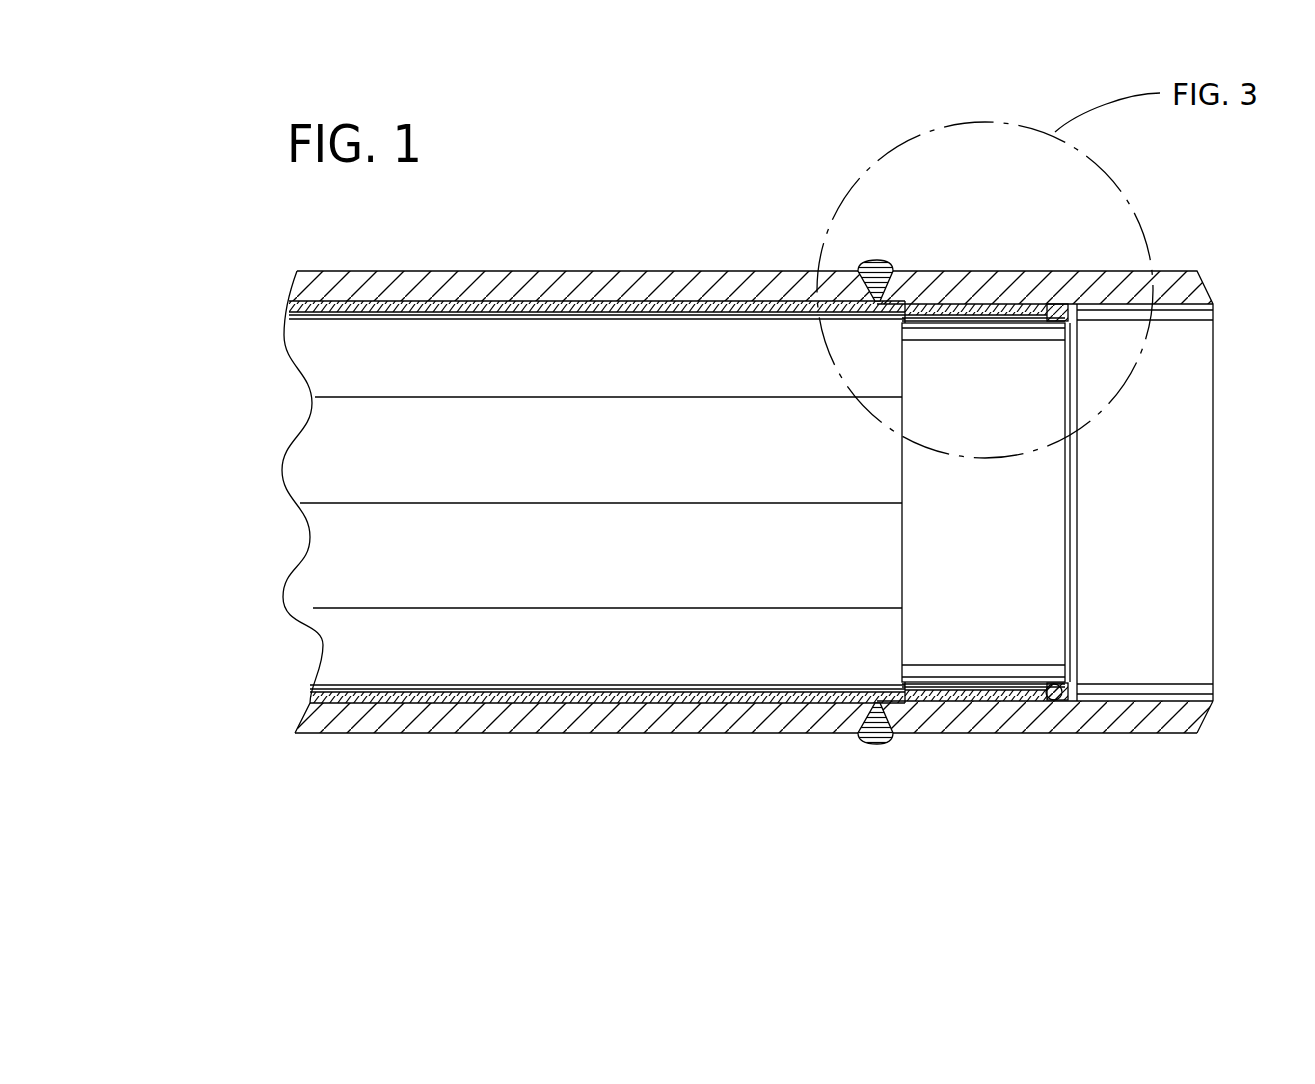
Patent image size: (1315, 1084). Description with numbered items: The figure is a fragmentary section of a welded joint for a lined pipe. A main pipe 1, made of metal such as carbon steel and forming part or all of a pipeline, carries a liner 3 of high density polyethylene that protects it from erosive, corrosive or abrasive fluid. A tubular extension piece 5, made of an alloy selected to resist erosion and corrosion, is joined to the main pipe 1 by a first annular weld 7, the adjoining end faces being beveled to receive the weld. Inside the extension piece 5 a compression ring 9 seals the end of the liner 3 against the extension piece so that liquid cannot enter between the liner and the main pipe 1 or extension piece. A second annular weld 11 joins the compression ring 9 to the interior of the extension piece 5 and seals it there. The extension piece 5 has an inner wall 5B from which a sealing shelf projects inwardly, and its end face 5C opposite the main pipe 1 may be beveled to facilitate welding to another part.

The main pipe 1 is at (478, 260).
The liner 3 is at (390, 318).
The extension piece 5 is at (1190, 260).
The inner wall 5B is at (1157, 700).
The end face 5C is at (1203, 718).
The first annular weld 7 is at (877, 741).
The compression ring 9 is at (1080, 683).
The second annular weld 11 is at (1075, 320).